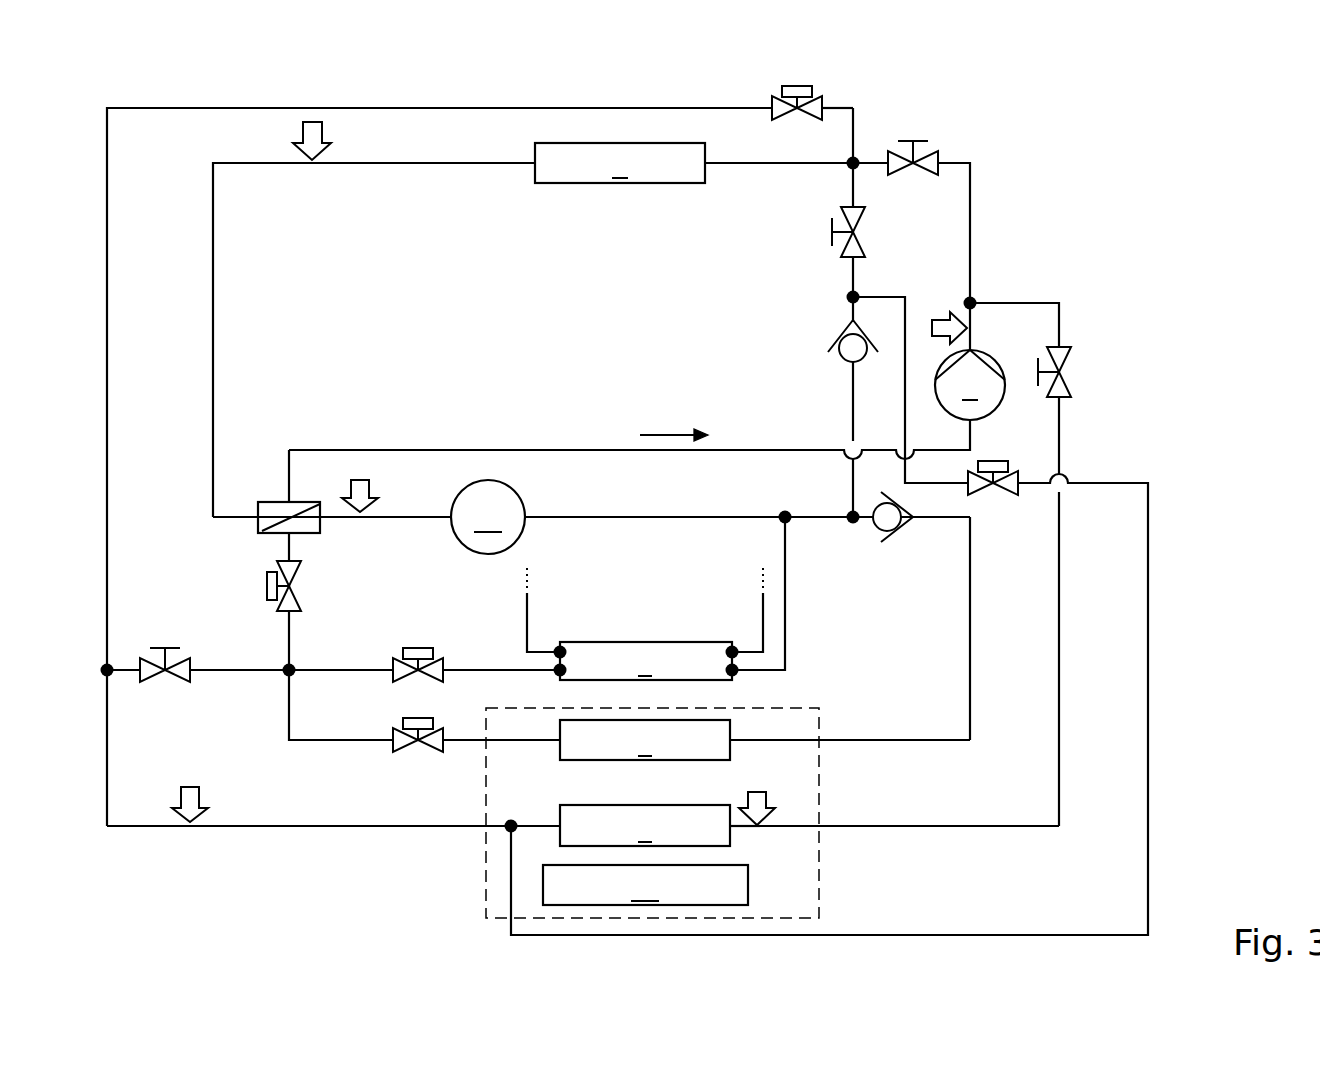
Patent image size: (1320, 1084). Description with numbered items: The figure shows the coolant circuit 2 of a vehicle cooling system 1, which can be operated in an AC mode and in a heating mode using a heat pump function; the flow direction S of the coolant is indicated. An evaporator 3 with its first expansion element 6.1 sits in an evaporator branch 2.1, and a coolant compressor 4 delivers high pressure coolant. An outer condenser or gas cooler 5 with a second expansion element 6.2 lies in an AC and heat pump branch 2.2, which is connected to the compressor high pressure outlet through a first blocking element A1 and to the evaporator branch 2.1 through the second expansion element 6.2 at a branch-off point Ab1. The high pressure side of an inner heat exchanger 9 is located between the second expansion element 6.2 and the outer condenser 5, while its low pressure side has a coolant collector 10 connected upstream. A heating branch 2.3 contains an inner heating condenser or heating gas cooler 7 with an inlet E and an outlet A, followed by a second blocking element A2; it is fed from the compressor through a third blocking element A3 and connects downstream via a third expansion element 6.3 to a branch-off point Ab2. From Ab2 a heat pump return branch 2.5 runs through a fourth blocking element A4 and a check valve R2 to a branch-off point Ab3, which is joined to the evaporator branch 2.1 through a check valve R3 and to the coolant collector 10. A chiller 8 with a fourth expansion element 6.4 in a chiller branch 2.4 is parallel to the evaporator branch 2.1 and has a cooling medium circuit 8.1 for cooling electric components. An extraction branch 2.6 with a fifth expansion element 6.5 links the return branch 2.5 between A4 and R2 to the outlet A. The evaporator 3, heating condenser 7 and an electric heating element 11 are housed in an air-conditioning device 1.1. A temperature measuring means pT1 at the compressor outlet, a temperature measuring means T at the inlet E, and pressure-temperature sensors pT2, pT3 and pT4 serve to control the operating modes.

The vehicle cooling system 1 is at (1105, 172).
The air-conditioning device 1.1 is at (819, 887).
The coolant circuit 2 is at (540, 442).
The evaporator branch 2.1 is at (467, 748).
The AC and heat pump branch 2.2 is at (438, 172).
The heating branch 2.3 is at (1050, 727).
The chiller branch 2.4 is at (489, 662).
The heat pump return branch 2.5 is at (845, 277).
The extraction branch 2.6 is at (1156, 716).
The evaporator 3 is at (765, 740).
The coolant compressor 4 is at (970, 361).
The outer condenser or gas cooler 5 is at (620, 163).
The first expansion element 6.1 is at (403, 720).
The second expansion element 6.2 is at (303, 586).
The third expansion element 6.3 is at (806, 87).
The fourth expansion element 6.4 is at (418, 648).
The fifth expansion element 6.5 is at (995, 462).
The inner heating condenser or heating gas cooler 7 is at (583, 825).
The chiller 8 is at (673, 596).
The cooling medium circuit 8.1 is at (534, 615).
The inner heat exchanger 9 is at (280, 503).
The coolant collector 10 is at (652, 517).
The electric heating element 11 is at (645, 885).
The outlet of the heating condenser A is at (558, 822).
The inlet of the heating condenser E is at (733, 828).
The temperature measuring means T is at (760, 795).
The flow direction of the coolant S is at (660, 432).
The first blocking element A1 is at (913, 140).
The second blocking element A2 is at (165, 648).
The third blocking element A3 is at (1062, 372).
The fourth blocking element A4 is at (858, 232).
The branch-off point Ab1 is at (297, 662).
The branch-off point Ab2 is at (847, 177).
The branch-off point Ab3 is at (853, 527).
The check valve R2 is at (851, 352).
The check valve R3 is at (898, 535).
The temperature measuring means pT1 is at (940, 314).
The pressure-temperature sensor pT2 is at (367, 485).
The pressure-temperature sensor pT3 is at (316, 130).
The pressure-temperature sensor pT4 is at (192, 795).